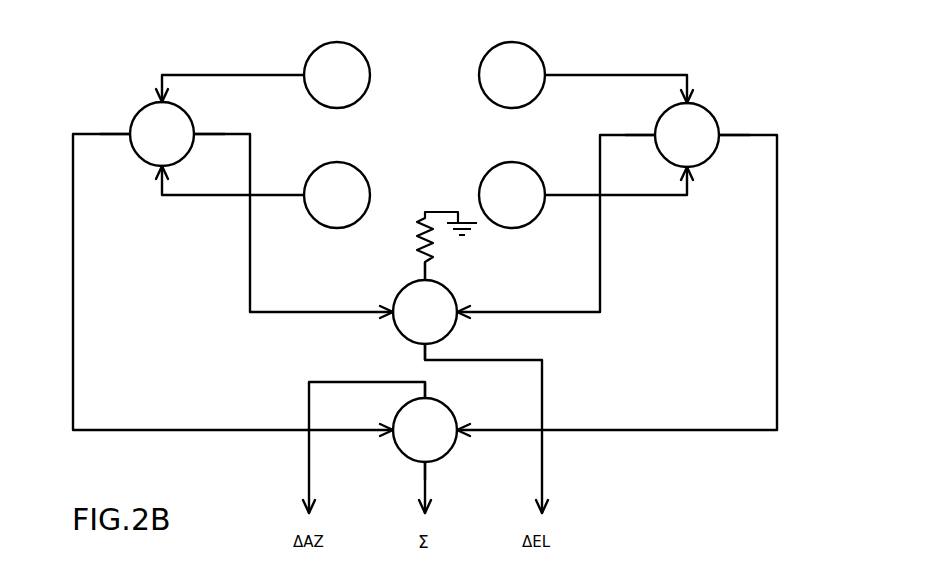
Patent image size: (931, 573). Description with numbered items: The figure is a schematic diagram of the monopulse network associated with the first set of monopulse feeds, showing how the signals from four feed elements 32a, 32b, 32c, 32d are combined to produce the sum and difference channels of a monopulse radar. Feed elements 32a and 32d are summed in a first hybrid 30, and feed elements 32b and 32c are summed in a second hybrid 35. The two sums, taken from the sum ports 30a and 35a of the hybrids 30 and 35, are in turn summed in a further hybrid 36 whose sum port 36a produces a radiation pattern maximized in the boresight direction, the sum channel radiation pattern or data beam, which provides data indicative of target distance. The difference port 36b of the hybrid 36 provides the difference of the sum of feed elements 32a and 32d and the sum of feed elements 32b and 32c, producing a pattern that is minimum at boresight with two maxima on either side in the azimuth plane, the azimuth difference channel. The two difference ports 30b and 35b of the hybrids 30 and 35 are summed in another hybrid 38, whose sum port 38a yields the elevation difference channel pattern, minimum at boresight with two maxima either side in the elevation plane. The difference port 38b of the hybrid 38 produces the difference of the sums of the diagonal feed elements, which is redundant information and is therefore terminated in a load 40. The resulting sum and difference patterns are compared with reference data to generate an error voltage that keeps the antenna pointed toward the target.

The hybrid 30 is at (152, 117).
The sum port 30a is at (130, 131).
The difference port 30b is at (196, 130).
The feed element 32a is at (323, 85).
The feed element 32b is at (498, 85).
The feed element 32c is at (498, 205).
The feed element 32d is at (323, 205).
The hybrid 35 is at (700, 118).
The sum port 35a is at (720, 133).
The difference port 35b is at (655, 131).
The hybrid 36 is at (413, 448).
The sum port 36a is at (437, 460).
The difference port 36b is at (430, 396).
The hybrid 38 is at (413, 297).
The sum port 38a is at (420, 344).
The difference port 38b is at (433, 280).
The load 40 is at (416, 243).